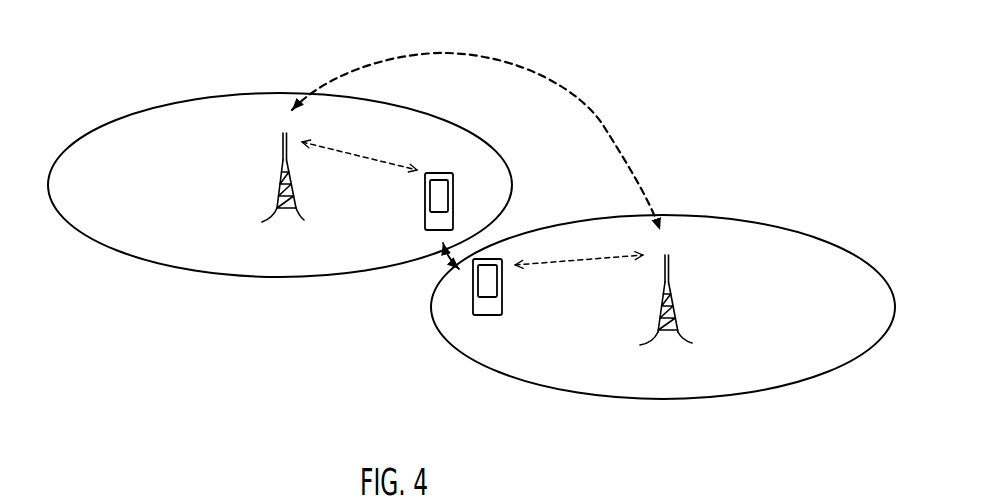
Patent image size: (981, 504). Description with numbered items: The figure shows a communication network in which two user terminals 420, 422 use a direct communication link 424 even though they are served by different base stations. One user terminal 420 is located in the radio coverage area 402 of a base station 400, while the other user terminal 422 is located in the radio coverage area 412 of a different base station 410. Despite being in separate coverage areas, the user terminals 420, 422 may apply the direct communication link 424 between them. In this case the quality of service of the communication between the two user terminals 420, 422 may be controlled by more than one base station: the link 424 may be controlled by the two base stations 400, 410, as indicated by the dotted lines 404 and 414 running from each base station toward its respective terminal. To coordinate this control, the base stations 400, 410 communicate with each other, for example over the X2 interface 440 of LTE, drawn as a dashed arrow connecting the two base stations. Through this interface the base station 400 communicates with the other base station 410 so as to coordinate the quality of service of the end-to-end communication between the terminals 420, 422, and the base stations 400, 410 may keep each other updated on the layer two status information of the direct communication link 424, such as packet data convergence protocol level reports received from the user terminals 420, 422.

The base station 400 is at (298, 207).
The radio coverage area 402 is at (170, 157).
The dotted line 404 is at (338, 148).
The base station 410 is at (683, 329).
The radio coverage area 412 is at (833, 283).
The dotted line 414 is at (566, 260).
The user terminal 420 is at (487, 183).
The user terminal 422 is at (503, 300).
The direct communication link 424 is at (451, 254).
The X2 interface 440 is at (560, 83).